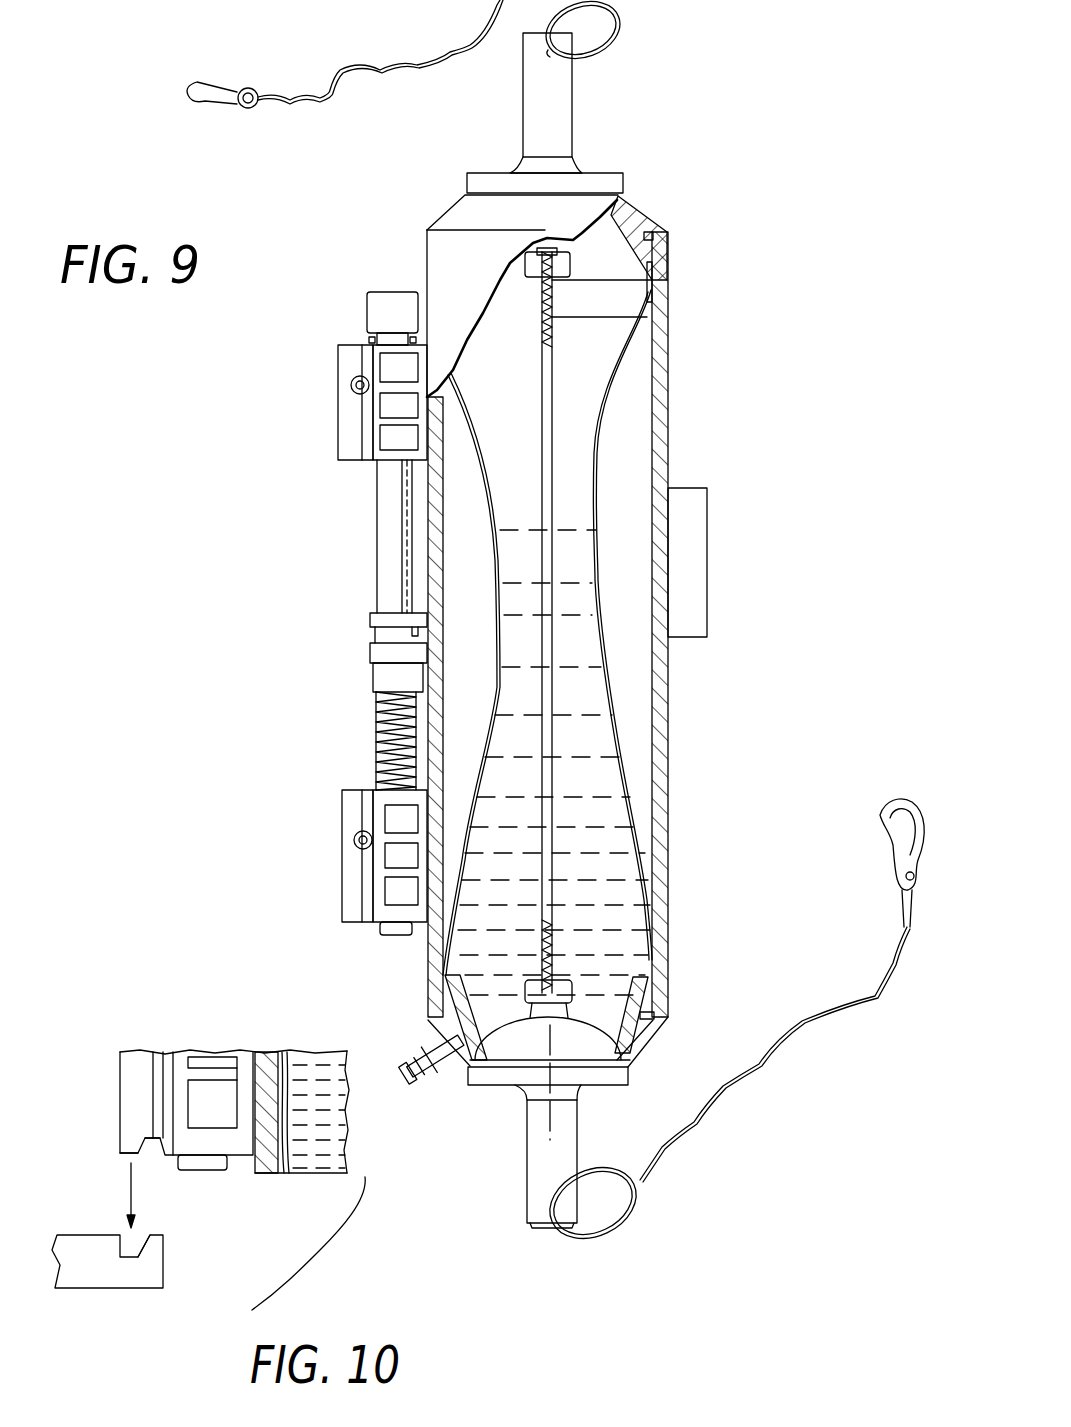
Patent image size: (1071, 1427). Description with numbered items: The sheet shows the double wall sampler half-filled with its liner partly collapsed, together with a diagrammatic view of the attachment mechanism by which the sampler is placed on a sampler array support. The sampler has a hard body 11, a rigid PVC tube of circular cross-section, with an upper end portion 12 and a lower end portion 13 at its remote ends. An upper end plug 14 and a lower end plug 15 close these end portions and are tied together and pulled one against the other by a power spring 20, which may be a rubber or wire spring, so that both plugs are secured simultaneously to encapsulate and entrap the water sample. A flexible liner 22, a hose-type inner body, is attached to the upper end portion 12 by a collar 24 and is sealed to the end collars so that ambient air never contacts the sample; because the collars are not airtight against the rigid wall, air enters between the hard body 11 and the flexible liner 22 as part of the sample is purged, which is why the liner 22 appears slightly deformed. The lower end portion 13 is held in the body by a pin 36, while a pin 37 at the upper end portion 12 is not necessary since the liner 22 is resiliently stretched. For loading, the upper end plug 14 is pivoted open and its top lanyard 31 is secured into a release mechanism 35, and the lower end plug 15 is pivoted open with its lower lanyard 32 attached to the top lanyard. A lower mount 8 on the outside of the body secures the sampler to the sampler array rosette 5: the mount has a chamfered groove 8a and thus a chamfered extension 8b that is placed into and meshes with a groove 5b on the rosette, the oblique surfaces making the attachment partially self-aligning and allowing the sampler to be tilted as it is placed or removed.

In FIG. 10, the sampler array rosette 5 is at (165, 1262).
In FIG. 10, the groove 5b is at (145, 1238).
In FIG. 9, the lower mount 8 is at (344, 882).
In FIG. 10, the lower mount 8 is at (120, 1096).
In FIG. 10, the chamfered groove 8a is at (153, 1152).
In FIG. 10, the chamfered extension 8b is at (128, 1158).
In FIG. 9, the hard body 11 is at (663, 352).
In FIG. 10, the hard body 11 is at (262, 1052).
In FIG. 9, the upper end portion 12 is at (622, 198).
In FIG. 9, the lower end portion 13 is at (650, 1002).
In FIG. 9, the upper end plug 14 is at (557, 117).
In FIG. 9, the lower end plug 15 is at (540, 1137).
In FIG. 9, the power spring 20 is at (552, 693).
In FIG. 9, the flexible liner 22 is at (600, 452).
In FIG. 10, the flexible liner 22 is at (285, 1055).
In FIG. 9, the collar 24 is at (653, 276).
In FIG. 9, the top lanyard 31 is at (335, 70).
In FIG. 9, the lower lanyard 32 is at (698, 1120).
In FIG. 9, the release mechanism 35 is at (373, 685).
In FIG. 9, the pin 36 is at (668, 1018).
In FIG. 9, the pin 37 is at (654, 236).